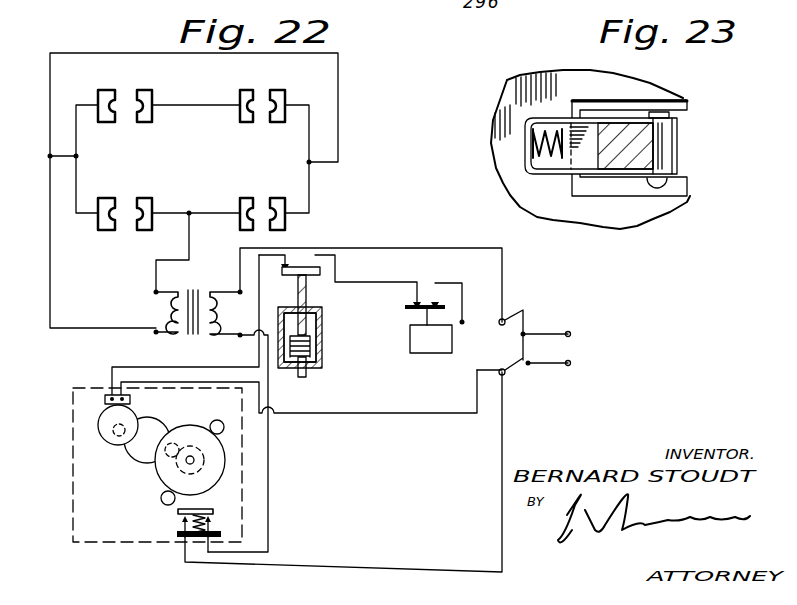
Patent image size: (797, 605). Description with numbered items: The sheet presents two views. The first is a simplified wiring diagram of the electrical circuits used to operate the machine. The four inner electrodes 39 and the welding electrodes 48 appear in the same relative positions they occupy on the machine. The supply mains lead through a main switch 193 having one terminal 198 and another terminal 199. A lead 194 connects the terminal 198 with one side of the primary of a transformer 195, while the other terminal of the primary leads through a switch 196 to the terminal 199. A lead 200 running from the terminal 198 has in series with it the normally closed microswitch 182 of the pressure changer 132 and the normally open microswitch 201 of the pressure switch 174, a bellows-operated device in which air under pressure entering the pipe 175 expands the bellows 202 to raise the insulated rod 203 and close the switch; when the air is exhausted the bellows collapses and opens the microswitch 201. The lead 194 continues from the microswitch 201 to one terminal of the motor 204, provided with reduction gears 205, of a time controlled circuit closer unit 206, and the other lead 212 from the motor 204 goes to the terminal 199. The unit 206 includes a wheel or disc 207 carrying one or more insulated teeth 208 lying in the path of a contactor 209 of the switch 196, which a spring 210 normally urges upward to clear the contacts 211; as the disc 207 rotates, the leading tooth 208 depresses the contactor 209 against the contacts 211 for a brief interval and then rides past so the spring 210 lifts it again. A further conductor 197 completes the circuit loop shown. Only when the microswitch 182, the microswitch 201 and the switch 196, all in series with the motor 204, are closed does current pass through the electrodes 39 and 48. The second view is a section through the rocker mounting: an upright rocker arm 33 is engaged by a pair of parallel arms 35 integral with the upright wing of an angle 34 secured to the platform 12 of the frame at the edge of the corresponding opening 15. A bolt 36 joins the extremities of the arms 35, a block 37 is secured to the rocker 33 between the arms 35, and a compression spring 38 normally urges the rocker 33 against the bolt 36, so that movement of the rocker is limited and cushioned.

In FIG. 22, the inner electrodes 39 is at (108, 90).
In FIG. 22, the welding electrodes 48 is at (150, 90).
In FIG. 22, the transformer 195 is at (197, 292).
In FIG. 22, the lead 194 is at (386, 248).
In FIG. 22, the lead 212 is at (350, 413).
In FIG. 22, the pressure switch 174 is at (334, 330).
In FIG. 22, the microswitch 201 is at (320, 258).
In FIG. 22, the insulated rod 203 is at (322, 324).
In FIG. 22, the bellows 202 is at (320, 346).
In FIG. 22, the pipe 175 is at (305, 378).
In FIG. 22, the microswitch 182 is at (427, 298).
In FIG. 22, the pressure changer 132 is at (425, 355).
In FIG. 22, the main switch 193 is at (544, 337).
In FIG. 22, the terminal 198 is at (505, 320).
In FIG. 22, the terminal 199 is at (506, 373).
In FIG. 22, the lead 200 is at (478, 320).
In FIG. 22, the conductor 197 is at (501, 525).
In FIG. 22, the time controlled circuit closer unit 206 is at (72, 491).
In FIG. 22, the reduction gears 205 is at (136, 465).
In FIG. 22, the insulated teeth 208 is at (216, 422).
In FIG. 22, the wheel or disc 207 is at (224, 453).
In FIG. 22, the motor 204 is at (97, 425).
In FIG. 22, the switch 196 is at (231, 527).
In FIG. 22, the contactor 209 is at (209, 509).
In FIG. 22, the contacts 211 is at (186, 527).
In FIG. 22, the spring 210 is at (191, 545).
In FIG. 23, the platform 12 is at (526, 88).
In FIG. 23, the opening 15 is at (676, 109).
In FIG. 23, the bolt 36 is at (663, 143).
In FIG. 23, the compression spring 38 is at (547, 158).
In FIG. 23, the block 37 is at (582, 165).
In FIG. 23, the rocker arm 33 is at (627, 132).
In FIG. 23, the angle 34 is at (530, 153).
In FIG. 23, the arms 35 is at (522, 116).